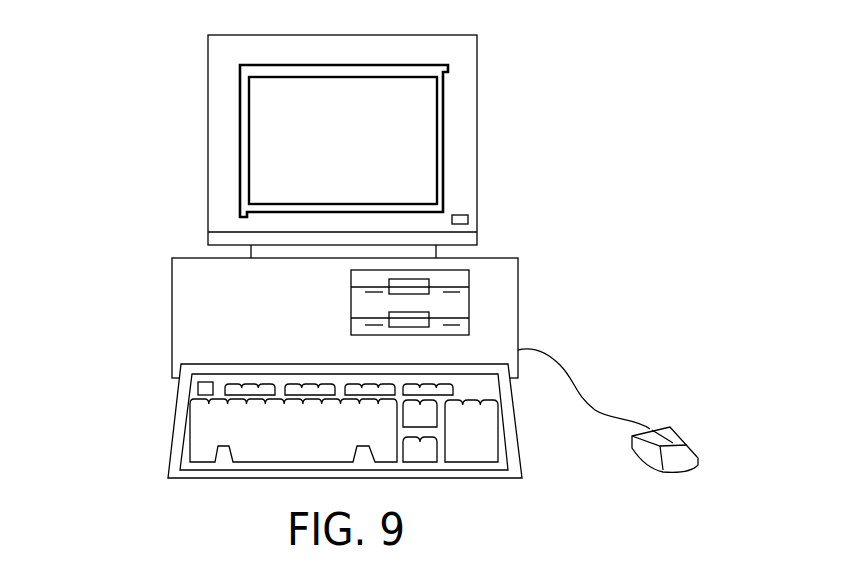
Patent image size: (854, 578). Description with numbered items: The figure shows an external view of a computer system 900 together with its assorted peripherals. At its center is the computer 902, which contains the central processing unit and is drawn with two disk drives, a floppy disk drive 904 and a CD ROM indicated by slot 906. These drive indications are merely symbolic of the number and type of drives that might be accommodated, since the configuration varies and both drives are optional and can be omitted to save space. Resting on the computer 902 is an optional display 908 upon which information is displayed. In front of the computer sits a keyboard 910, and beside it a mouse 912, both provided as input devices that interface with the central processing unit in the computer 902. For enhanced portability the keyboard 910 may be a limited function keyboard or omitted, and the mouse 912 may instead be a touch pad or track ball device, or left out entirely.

The computer system 900 is at (410, 256).
The computer 902 is at (320, 290).
The floppy disk drive 904 is at (340, 297).
The CD ROM slot 906 is at (340, 328).
The display 908 is at (495, 105).
The keyboard 910 is at (164, 426).
The mouse 912 is at (740, 433).